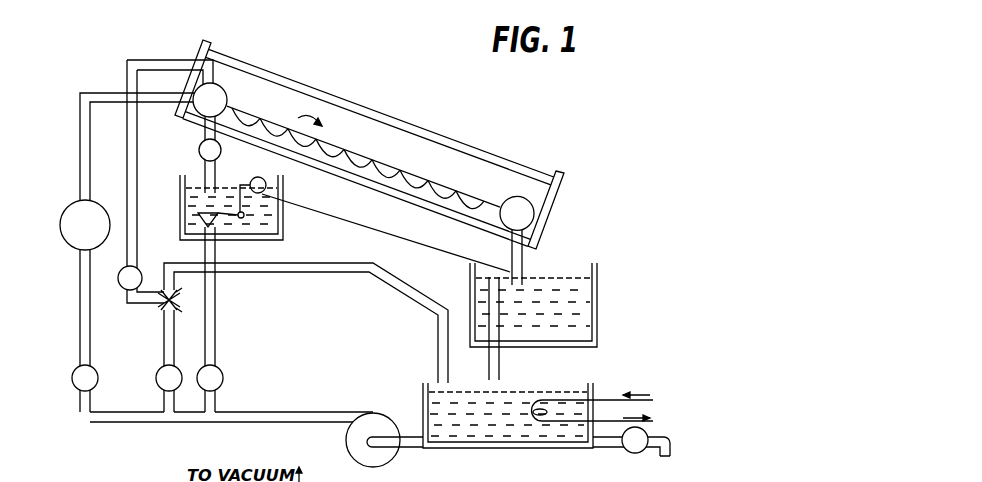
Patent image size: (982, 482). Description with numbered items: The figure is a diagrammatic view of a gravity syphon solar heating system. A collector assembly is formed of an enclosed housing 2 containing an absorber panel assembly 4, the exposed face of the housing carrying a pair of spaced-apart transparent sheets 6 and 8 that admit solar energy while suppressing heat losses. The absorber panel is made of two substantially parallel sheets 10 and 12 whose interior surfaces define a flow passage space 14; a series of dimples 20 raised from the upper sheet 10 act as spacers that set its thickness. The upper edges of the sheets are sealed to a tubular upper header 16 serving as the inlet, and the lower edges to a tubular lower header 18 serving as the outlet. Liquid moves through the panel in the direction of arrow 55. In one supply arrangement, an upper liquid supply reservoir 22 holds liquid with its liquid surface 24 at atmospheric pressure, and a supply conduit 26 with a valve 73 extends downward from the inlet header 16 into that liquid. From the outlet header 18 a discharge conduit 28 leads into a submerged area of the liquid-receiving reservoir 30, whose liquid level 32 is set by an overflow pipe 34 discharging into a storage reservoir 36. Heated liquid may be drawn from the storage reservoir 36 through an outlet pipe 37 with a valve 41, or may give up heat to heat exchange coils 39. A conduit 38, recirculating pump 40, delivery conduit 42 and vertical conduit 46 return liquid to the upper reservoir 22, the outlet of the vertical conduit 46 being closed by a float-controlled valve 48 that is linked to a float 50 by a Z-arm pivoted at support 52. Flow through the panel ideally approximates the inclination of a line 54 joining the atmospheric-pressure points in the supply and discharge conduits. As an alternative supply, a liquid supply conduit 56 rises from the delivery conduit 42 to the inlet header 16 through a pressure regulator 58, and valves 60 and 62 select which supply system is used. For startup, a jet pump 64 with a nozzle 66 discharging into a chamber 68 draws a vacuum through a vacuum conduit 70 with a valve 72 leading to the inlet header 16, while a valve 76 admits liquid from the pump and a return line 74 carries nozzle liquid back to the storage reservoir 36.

The enclosed housing 2 is at (565, 183).
The absorber panel assembly 4 is at (267, 107).
The transparent sheet 6 is at (346, 100).
The transparent sheet 8 is at (424, 136).
The upper sheet 10 is at (455, 188).
The lower sheet 12 is at (440, 208).
The flow passage space 14 is at (373, 162).
The upper header 16 is at (216, 84).
The lower header 18 is at (536, 214).
The dimples 20 is at (401, 169).
The upper liquid supply reservoir 22 is at (284, 196).
The liquid surface 24 is at (183, 178).
The supply conduit 26 is at (199, 152).
The discharge conduit 28 is at (511, 250).
The liquid-receiving reservoir 30 is at (470, 296).
The liquid level 32 is at (541, 268).
The overflow pipe 34 is at (500, 362).
The storage reservoir 36 is at (535, 435).
The outlet pipe 37 is at (671, 450).
The conduit 38 is at (412, 447).
The heat exchange coils 39 is at (545, 398).
The recirculating pump 40 is at (388, 416).
The valve 41 is at (638, 453).
The delivery conduit 42 is at (310, 411).
The vertical conduit 46 is at (216, 302).
The float-controlled valve 48 is at (199, 217).
The float 50 is at (257, 176).
The pivotal support 52 is at (246, 217).
The line 54 is at (364, 229).
The arrow 55 is at (313, 126).
The liquid supply conduit 56 is at (80, 128).
The pressure regulator 58 is at (63, 212).
The valve 60 is at (223, 378).
The valve 62 is at (72, 378).
The jet pump 64 is at (160, 309).
The nozzle 66 is at (187, 318).
The chamber 68 is at (188, 281).
The vacuum conduit 70 is at (127, 167).
The valve 72 is at (120, 287).
The valve 73 is at (204, 133).
The return line 74 is at (349, 273).
The valve 76 is at (156, 379).